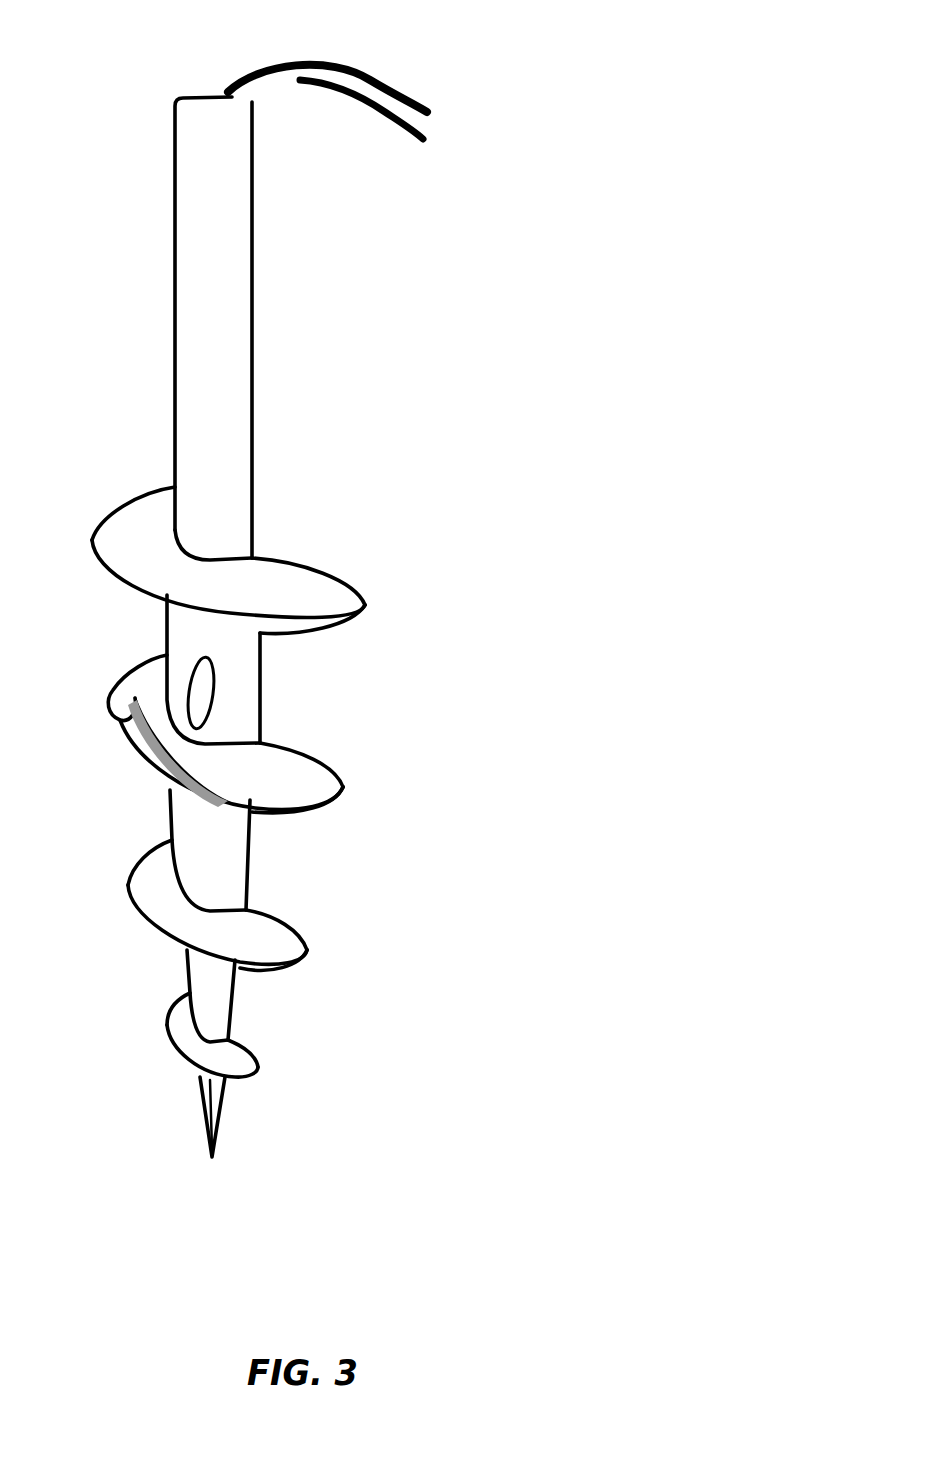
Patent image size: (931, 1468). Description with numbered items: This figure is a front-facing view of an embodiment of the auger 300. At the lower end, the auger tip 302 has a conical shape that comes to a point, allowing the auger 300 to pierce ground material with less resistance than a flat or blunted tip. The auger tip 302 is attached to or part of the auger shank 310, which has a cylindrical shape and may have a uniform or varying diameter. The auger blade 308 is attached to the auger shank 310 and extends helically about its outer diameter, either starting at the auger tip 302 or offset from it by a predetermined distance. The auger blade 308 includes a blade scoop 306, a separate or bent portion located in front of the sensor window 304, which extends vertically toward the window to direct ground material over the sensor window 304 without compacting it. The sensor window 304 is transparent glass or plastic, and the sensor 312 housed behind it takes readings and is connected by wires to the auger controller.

The auger 300 is at (722, 77).
The auger tip 302 is at (208, 1157).
The sensor window 304 is at (206, 703).
The blade scoop 306 is at (140, 720).
The auger blade 308 is at (312, 567).
The auger shank 310 is at (175, 383).
The sensor 312 is at (417, 148).